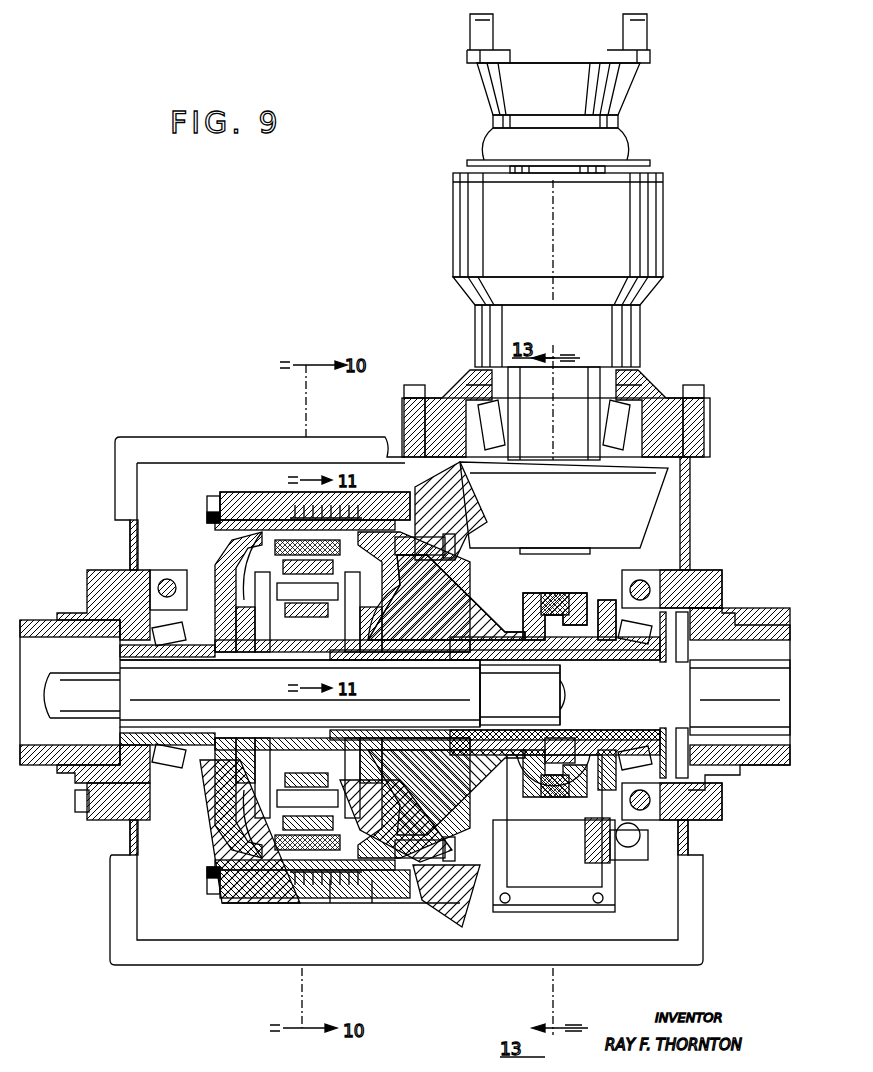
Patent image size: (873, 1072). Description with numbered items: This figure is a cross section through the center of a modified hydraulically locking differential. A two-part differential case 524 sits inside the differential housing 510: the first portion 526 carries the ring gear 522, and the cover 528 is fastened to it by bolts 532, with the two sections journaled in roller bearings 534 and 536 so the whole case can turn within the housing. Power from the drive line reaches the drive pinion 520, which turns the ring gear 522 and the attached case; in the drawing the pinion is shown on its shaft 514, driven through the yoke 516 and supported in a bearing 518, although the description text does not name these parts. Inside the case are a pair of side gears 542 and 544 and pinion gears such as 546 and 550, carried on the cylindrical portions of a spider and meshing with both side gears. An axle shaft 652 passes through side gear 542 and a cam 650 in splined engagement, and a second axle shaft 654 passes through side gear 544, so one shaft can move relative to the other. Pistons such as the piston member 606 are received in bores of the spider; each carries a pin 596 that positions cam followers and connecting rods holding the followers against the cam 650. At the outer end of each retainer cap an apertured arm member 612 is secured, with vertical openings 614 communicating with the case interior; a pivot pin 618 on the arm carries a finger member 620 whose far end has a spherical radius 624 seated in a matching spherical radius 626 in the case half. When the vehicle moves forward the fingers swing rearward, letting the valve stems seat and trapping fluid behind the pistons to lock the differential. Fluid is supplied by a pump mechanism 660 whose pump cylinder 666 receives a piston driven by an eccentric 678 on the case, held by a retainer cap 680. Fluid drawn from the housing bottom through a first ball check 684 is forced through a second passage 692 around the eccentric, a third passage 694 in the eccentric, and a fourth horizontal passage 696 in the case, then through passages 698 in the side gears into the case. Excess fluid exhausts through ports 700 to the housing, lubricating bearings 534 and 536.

The differential housing 510 is at (698, 498).
The pinion shaft 514 is at (562, 446).
The yoke 516 is at (652, 250).
The tapered roller bearing 518 is at (626, 417).
The drive pinion 520 is at (600, 533).
The ring gear 522 is at (468, 497).
The differential case 524 is at (392, 462).
The first portion of the case 526 is at (455, 603).
The cover 528 is at (225, 876).
The bolts 532 is at (207, 500).
The roller bearing 534 is at (178, 600).
The roller bearing 536 is at (652, 585).
The side gear 542 is at (228, 740).
The side gear 544 is at (385, 742).
The pinion gear 546 is at (420, 595).
The pinion gear 550 is at (400, 800).
The pin 596 is at (323, 599).
The piston member 606 is at (195, 860).
The apertured arm member 612 is at (400, 548).
The vertical openings 614 is at (256, 899).
The pivot pin 618 is at (372, 896).
The finger member 620 is at (345, 892).
The spherical radius 624 is at (408, 900).
The spherical radius 626 is at (442, 864).
The cam 650 is at (290, 656).
The axle shaft 652 is at (80, 708).
The second axle shaft 654 is at (562, 690).
The pump mechanism 660 is at (513, 917).
The pump cylinder 666 is at (545, 873).
The eccentric 678 is at (560, 736).
The retainer cap 680 is at (578, 592).
The first ball check 684 is at (632, 866).
The second passage 692 is at (560, 650).
The third passage 694 is at (562, 654).
The fourth horizontal passage 696 is at (505, 648).
The passages 698 is at (228, 646).
The ports 700 is at (596, 640).